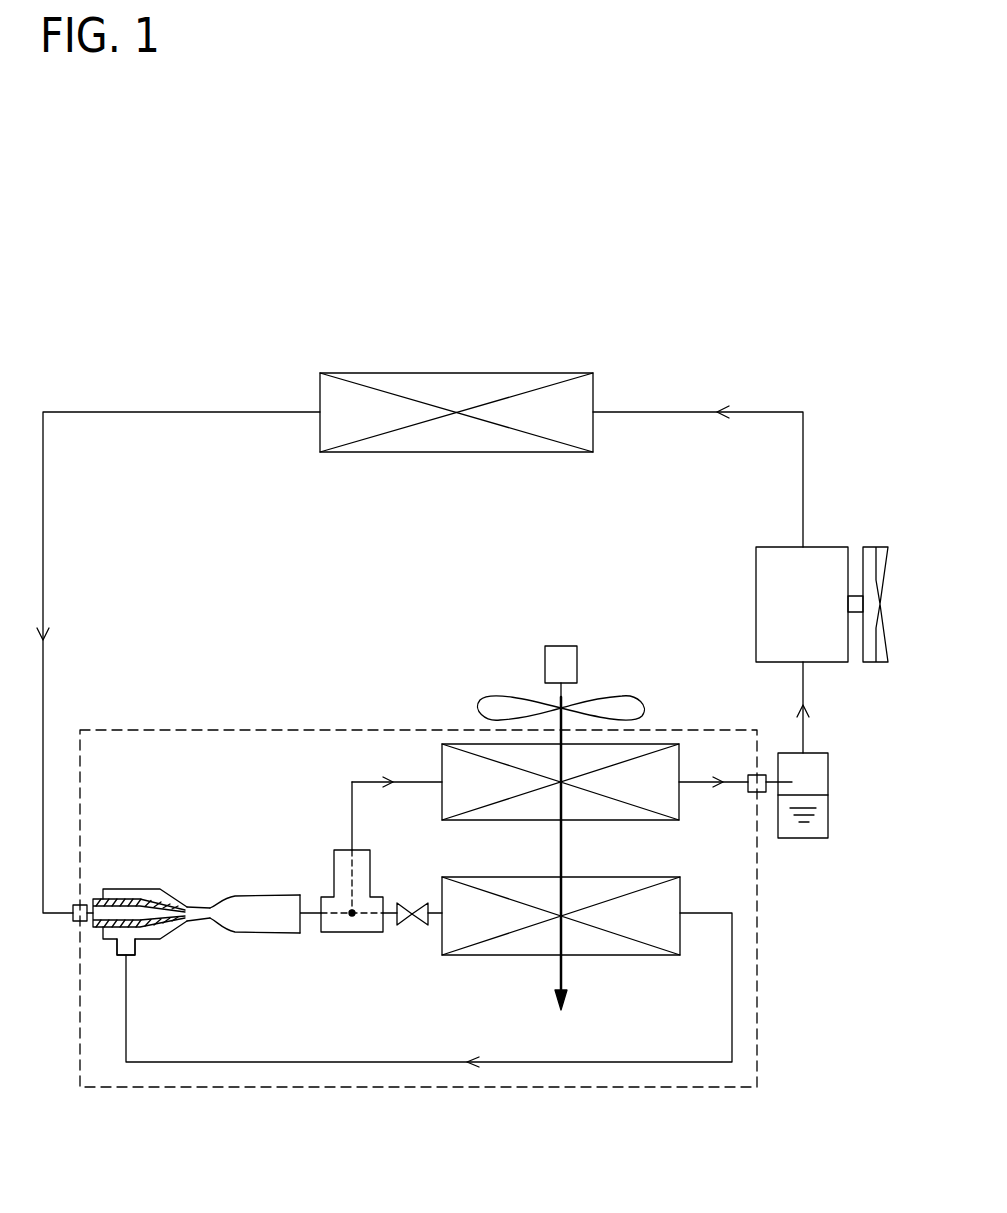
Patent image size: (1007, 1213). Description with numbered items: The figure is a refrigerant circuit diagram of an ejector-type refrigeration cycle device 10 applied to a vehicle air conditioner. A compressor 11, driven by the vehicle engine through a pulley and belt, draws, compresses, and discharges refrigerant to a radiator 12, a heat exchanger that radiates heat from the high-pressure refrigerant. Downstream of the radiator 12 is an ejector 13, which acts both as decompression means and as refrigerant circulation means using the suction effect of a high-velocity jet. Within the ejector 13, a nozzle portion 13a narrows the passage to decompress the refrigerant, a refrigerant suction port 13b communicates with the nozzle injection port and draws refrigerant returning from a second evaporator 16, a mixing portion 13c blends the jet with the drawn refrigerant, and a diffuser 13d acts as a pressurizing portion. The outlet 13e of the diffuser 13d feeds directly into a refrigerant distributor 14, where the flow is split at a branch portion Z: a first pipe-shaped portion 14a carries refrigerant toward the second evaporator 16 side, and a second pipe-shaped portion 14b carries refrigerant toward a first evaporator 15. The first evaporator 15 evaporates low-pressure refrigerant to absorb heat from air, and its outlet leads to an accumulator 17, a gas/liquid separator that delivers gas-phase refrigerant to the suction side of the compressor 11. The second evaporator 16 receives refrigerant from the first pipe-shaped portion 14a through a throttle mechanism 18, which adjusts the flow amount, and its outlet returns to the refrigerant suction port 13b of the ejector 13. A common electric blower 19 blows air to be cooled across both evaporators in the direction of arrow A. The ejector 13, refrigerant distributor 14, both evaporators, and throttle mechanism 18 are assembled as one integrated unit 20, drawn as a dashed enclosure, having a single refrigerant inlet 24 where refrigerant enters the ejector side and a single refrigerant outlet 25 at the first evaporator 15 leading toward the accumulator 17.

The ejector-type refrigeration cycle device 10 is at (698, 352).
The compressor 11 is at (824, 547).
The radiator 12 is at (475, 373).
The ejector 13 is at (212, 924).
The nozzle portion 13a is at (150, 889).
The refrigerant suction port 13b is at (127, 957).
The mixing portion 13c is at (210, 918).
The diffuser 13d is at (278, 918).
The outlet 13e is at (300, 925).
The refrigerant distributor 14 is at (368, 900).
The first pipe-shaped portion 14a is at (368, 932).
The second pipe-shaped portion 14b is at (371, 875).
The first evaporator 15 is at (662, 744).
The second evaporator 16 is at (648, 955).
The accumulator 17 is at (812, 838).
The throttle mechanism 18 is at (411, 926).
The electric blower 19 is at (622, 697).
The integrated unit 20 is at (158, 1094).
The refrigerant inlet 24 is at (73, 921).
The refrigerant outlet 25 is at (758, 775).
The branch portion Z is at (350, 920).
The arrow A (air flow direction) A is at (561, 968).